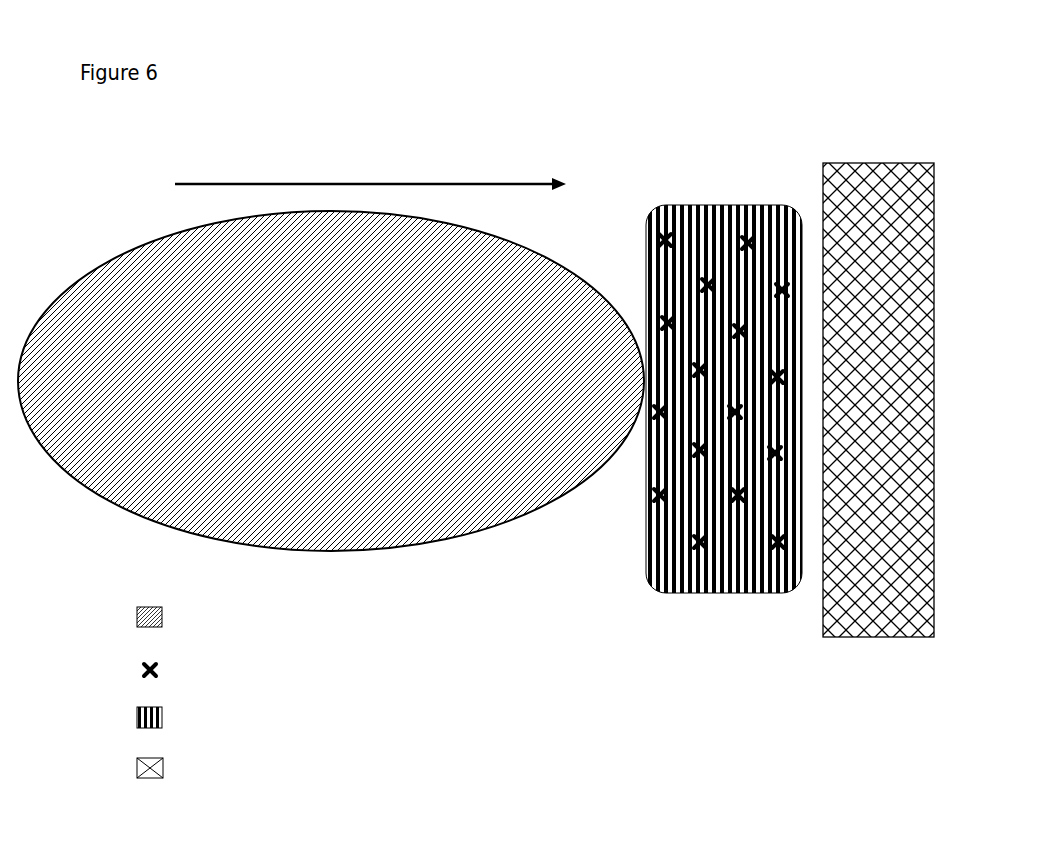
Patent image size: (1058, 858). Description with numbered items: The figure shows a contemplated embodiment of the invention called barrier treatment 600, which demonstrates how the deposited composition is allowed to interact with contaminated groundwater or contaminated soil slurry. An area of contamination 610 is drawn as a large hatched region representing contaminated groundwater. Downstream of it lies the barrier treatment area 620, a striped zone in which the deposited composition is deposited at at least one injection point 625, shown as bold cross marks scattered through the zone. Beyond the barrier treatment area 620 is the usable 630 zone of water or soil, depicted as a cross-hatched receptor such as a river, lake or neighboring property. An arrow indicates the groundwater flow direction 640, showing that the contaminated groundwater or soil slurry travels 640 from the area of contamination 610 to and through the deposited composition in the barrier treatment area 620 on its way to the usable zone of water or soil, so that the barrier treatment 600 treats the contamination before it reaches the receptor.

The barrier treatment 600 is at (476, 419).
The area of contamination 610 is at (331, 421).
The barrier treatment area 620 is at (469, 468).
The injection point 625 is at (466, 457).
The usable zone of water or soil 630 is at (535, 488).
The groundwater flow direction 640 is at (370, 171).